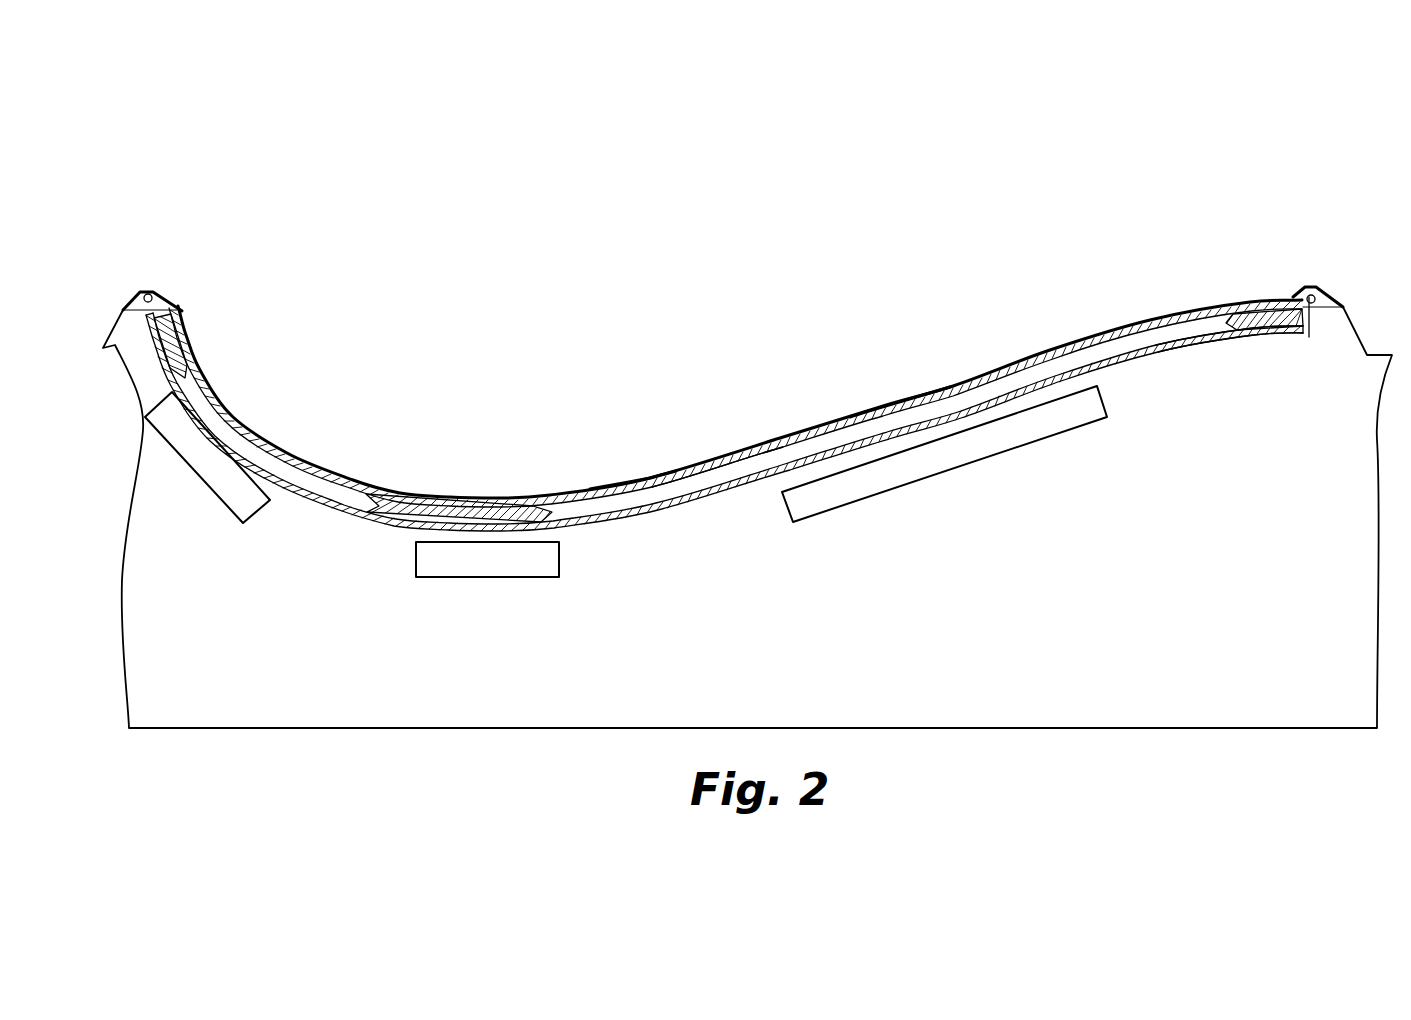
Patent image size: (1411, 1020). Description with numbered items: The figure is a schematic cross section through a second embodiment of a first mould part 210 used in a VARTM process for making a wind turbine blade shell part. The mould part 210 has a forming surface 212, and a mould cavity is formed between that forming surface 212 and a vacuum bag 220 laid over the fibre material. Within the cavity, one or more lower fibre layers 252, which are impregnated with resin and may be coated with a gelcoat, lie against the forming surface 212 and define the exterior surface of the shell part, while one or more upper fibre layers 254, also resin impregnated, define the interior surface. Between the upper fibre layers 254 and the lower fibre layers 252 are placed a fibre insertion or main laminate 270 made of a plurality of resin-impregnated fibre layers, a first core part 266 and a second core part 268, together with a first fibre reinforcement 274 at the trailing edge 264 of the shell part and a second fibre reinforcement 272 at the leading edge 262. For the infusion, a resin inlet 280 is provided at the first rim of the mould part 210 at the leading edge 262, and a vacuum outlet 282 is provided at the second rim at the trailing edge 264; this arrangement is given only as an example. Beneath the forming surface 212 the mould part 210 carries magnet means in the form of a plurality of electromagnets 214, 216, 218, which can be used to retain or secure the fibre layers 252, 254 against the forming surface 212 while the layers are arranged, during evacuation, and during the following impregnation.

The first mould part 210 is at (852, 605).
The forming surface 212 is at (1223, 333).
The electromagnet 214 is at (223, 500).
The electromagnet 216 is at (513, 560).
The electromagnet 218 is at (973, 443).
The vacuum bag 220 is at (617, 480).
The lower fibre layers 252 is at (1142, 345).
The upper fibre layers 254 is at (888, 398).
The leading edge 262 is at (123, 303).
The trailing edge 264 is at (1328, 303).
The first core part 266 is at (280, 460).
The second core part 268 is at (697, 482).
The main laminate 270 is at (495, 508).
The second fibre reinforcement 272 is at (160, 313).
The first fibre reinforcement 274 is at (1250, 302).
The resin inlet 280 is at (153, 292).
The vacuum outlet 282 is at (1307, 288).